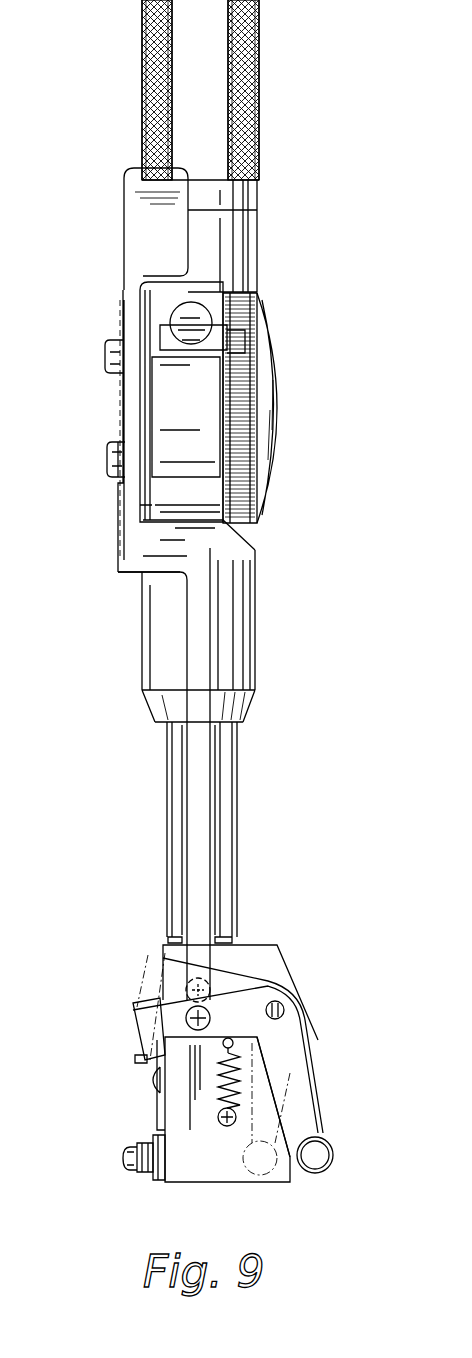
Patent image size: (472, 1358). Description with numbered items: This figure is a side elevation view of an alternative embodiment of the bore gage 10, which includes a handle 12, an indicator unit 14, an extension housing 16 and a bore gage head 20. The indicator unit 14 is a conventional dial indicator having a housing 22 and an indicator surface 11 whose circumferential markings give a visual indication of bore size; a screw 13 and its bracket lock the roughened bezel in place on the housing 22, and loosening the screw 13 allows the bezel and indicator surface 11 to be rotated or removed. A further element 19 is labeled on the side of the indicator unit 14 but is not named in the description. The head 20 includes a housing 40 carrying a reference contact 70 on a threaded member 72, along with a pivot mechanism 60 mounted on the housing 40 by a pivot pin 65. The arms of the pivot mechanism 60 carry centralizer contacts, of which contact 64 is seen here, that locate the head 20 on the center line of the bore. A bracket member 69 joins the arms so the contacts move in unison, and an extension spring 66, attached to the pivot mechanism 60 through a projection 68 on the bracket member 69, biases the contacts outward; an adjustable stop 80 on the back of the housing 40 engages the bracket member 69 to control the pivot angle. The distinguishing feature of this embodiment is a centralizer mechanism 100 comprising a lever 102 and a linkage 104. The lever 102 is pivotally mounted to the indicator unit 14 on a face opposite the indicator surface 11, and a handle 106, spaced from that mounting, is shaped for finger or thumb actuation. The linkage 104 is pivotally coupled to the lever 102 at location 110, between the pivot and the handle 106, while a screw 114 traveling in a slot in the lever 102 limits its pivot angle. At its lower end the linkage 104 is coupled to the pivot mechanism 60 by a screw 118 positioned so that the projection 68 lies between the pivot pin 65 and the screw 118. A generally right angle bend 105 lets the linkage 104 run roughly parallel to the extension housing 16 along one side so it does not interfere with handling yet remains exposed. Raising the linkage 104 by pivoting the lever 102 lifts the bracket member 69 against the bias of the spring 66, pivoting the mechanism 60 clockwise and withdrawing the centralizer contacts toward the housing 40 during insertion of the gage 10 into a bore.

The bore gage 10 is at (92, 588).
The indicator surface 11 is at (275, 367).
The handle 12 is at (262, 30).
The screw 13 is at (200, 312).
The indicator unit 14 is at (270, 305).
The extension housing 16 is at (238, 860).
The dial indicator 19 is at (147, 397).
The bore gage head 20 is at (328, 990).
The housing 22 is at (143, 642).
The housing 40 is at (262, 947).
The pivot mechanism 60 is at (278, 978).
The centralizer contact 64 is at (330, 1166).
The pivot pin 65 is at (284, 1011).
The extension spring 66 is at (217, 1087).
The projection 68 is at (220, 1046).
The bracket member 69 is at (140, 1041).
The reference contact 70 is at (123, 1153).
The threaded member 72 is at (142, 1173).
The adjustable stop 80 is at (137, 1058).
The centralizer mechanism 100 is at (110, 315).
The lever 102 is at (123, 285).
The linkage 104 is at (185, 795).
The right angle bend 105 is at (200, 567).
The handle 106 is at (127, 180).
The location 110 is at (108, 458).
The screw 114 is at (107, 348).
The screw 118 is at (170, 1023).